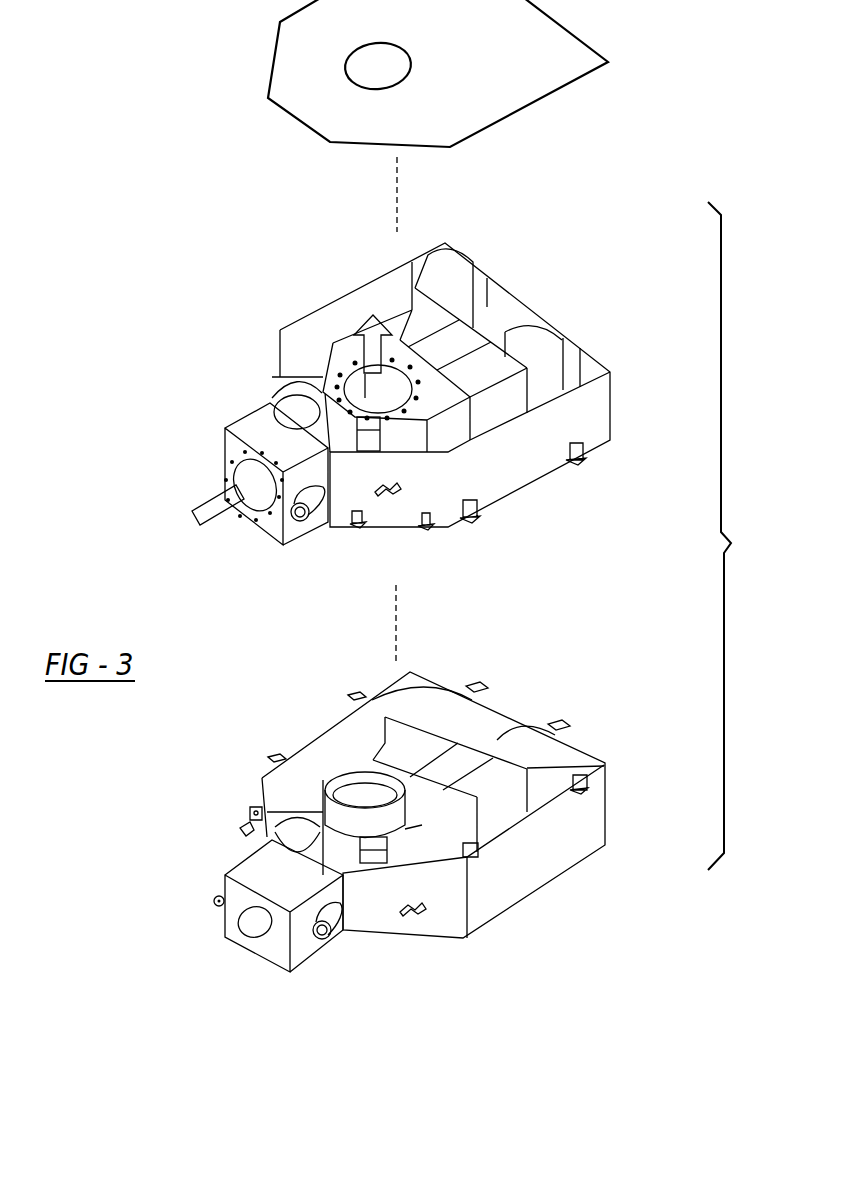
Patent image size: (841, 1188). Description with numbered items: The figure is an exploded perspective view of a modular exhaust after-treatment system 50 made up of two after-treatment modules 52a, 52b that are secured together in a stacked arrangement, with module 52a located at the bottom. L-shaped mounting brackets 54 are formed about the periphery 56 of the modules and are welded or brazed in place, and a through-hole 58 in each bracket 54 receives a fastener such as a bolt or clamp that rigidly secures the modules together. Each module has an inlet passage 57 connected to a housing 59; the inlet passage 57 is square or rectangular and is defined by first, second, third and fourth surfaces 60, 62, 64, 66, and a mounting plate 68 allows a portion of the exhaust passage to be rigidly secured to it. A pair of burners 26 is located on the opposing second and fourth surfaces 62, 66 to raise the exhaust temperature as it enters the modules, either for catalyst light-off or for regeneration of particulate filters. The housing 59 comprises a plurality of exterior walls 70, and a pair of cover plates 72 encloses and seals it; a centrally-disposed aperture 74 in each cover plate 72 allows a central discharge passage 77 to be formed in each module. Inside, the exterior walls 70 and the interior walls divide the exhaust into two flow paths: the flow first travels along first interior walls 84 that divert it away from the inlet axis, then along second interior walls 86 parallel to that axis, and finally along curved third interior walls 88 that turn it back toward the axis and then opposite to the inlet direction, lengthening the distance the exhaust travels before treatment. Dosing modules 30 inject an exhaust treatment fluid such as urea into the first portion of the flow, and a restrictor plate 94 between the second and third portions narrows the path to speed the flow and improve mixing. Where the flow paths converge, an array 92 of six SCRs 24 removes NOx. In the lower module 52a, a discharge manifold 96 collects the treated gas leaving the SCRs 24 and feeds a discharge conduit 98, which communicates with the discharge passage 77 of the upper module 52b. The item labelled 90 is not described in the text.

The SCR 24 is at (426, 336).
The burner 26 is at (223, 462).
The dosing module 30 is at (262, 390).
The modular exhaust after-treatment system 50 is at (732, 536).
The after-treatment module 52a is at (573, 868).
The after-treatment module 52b is at (547, 303).
The L-shaped mounting bracket 54 is at (358, 525).
The periphery 56 is at (538, 460).
The inlet passage 57 is at (290, 558).
The through-hole 58 is at (358, 525).
The housing 59 is at (364, 284).
The first surface 60 is at (263, 430).
The second surface 62 is at (312, 523).
The third surface 64 is at (262, 532).
The fourth surface 66 is at (225, 480).
The mounting plate 68 is at (243, 517).
The exterior wall 70 is at (448, 250).
The cover plate 72 is at (552, 73).
The aperture 74 is at (413, 74).
The discharge passage 77 is at (362, 370).
The first interior wall 84 is at (315, 803).
The second interior wall 86 is at (337, 762).
The third interior wall 88 is at (433, 687).
The bore 90 is at (313, 378).
The array 92 is at (522, 306).
The restrictor plate 94 is at (413, 290).
The discharge manifold 96 is at (406, 800).
The discharge conduit 98 is at (423, 830).